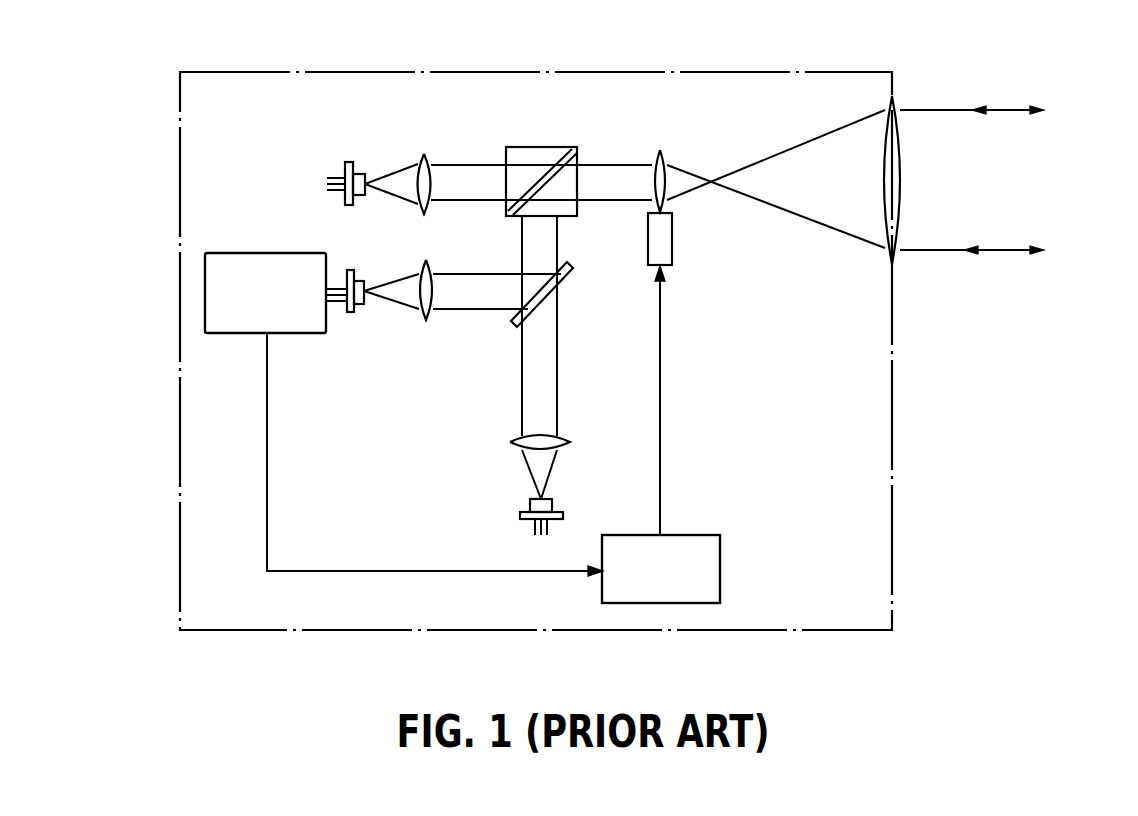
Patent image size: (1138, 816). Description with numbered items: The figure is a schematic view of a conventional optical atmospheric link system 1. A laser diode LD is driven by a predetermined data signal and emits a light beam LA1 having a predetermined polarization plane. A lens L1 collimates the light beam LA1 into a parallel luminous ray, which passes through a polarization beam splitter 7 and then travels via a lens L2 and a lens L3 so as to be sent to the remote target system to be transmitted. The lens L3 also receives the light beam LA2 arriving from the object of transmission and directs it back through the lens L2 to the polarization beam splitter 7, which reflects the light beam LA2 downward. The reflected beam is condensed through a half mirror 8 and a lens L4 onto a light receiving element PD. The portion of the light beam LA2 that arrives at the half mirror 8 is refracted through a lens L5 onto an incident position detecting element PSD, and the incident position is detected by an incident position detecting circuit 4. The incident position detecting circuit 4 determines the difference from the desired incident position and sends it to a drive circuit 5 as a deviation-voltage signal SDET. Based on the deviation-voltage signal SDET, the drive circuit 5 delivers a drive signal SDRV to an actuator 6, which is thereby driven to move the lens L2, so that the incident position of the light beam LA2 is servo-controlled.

The optical atmospheric link system 1 is at (223, 37).
The incident position detecting circuit 4 is at (308, 335).
The drive circuit 5 is at (703, 535).
The actuator 6 is at (673, 243).
The polarization beam splitter 7 is at (576, 150).
The half mirror 8 is at (572, 272).
The laser diode LD is at (350, 162).
The lens L1 is at (430, 155).
The lens L2 is at (666, 150).
The lens L3 is at (905, 140).
The lens L4 is at (567, 436).
The lens L5 is at (429, 318).
The incident position detecting element PSD is at (356, 313).
The light receiving element PD is at (560, 510).
The light beam LA1 is at (1040, 108).
The light beam LA2 is at (977, 108).
The drive signal SDRV is at (662, 378).
The deviation-voltage signal SDET is at (360, 571).